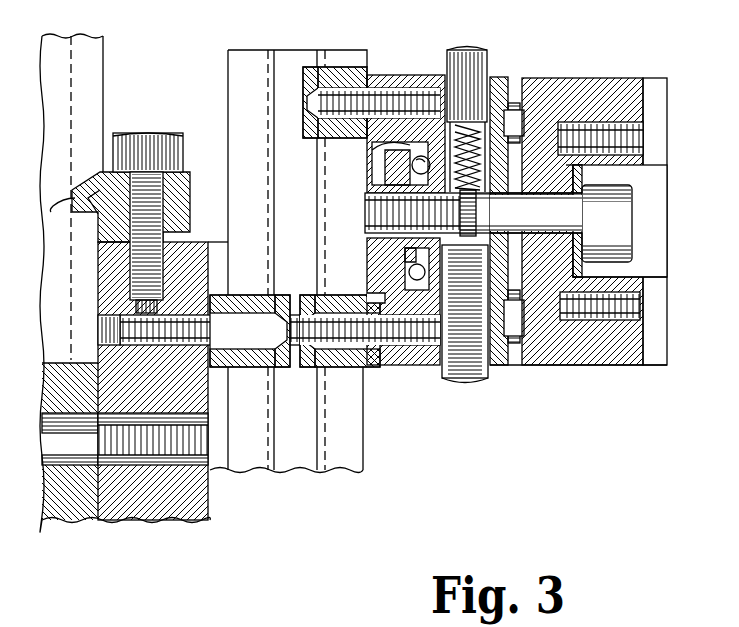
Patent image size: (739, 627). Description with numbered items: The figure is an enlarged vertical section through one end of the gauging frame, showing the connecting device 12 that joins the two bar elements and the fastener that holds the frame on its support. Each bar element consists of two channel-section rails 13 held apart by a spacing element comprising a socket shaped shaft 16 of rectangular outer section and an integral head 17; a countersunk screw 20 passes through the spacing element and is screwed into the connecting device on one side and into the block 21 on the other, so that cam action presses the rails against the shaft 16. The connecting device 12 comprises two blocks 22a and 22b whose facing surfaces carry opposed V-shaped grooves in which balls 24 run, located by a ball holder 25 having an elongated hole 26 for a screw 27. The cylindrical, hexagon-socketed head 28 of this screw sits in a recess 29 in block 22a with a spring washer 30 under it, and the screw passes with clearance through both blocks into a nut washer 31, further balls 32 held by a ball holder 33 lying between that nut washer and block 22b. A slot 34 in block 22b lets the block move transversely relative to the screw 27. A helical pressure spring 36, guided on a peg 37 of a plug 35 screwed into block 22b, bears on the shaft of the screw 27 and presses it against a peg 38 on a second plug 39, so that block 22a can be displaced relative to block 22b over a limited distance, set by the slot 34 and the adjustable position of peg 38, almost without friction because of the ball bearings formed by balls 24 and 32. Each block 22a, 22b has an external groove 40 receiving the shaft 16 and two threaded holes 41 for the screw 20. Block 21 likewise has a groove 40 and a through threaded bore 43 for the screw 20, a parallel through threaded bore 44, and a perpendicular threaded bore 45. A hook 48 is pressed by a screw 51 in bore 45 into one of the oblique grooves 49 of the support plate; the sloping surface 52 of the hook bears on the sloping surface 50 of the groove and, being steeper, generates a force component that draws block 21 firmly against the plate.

The connecting device 12 is at (554, 62).
The rail 13 is at (246, 60).
The socket shaped shaft 16 is at (249, 366).
The head 17 is at (299, 366).
The screw 20 is at (118, 330).
The block 21 is at (190, 252).
The block 22a is at (578, 90).
The block 22b is at (500, 76).
The balls 24 is at (510, 350).
The ball holder 25 is at (516, 350).
The elongated hole 26 is at (576, 196).
The screw 27 is at (562, 200).
The head 28 is at (624, 218).
The recess 29 is at (660, 270).
The spring washer 30 is at (582, 196).
The nut washer 31 is at (372, 188).
The balls 32 is at (418, 166).
The ball holder 33 is at (395, 152).
The slot 34 is at (520, 198).
The plug 35 is at (463, 52).
The pressure spring 36 is at (440, 195).
The peg 37 is at (462, 132).
The peg 38 is at (470, 197).
The plug 39 is at (460, 382).
The groove 40 is at (228, 257).
The threaded holes 41 is at (615, 120).
The through threaded bore 43 is at (100, 320).
The through threaded bore 44 is at (206, 450).
The threaded bore 45 is at (135, 304).
The hook 48 is at (100, 180).
The grooves 49 is at (72, 212).
The sloping surface 50 is at (76, 206).
The screw 51 is at (149, 142).
The sloping surface 52 is at (99, 216).